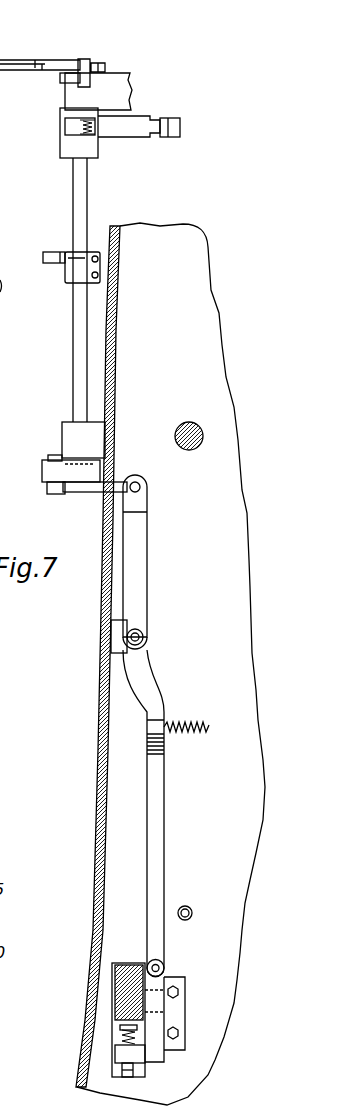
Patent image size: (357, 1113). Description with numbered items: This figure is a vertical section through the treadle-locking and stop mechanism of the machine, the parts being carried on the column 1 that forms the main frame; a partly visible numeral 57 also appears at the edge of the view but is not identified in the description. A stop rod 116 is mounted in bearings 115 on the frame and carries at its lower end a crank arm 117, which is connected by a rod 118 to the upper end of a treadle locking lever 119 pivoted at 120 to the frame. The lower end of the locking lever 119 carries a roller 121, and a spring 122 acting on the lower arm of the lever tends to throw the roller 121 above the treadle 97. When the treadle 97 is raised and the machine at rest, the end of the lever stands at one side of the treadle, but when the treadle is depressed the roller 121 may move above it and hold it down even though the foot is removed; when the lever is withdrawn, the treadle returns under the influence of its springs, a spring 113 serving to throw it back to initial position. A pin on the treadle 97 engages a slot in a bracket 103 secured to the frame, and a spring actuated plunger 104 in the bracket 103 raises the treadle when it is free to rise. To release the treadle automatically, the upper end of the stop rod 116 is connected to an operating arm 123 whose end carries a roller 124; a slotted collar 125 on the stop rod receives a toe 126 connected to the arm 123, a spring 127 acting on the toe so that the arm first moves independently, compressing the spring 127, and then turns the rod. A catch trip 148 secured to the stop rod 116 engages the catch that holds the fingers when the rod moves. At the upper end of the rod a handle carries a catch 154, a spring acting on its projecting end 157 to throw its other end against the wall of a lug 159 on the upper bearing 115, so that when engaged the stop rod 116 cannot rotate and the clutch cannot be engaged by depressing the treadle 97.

The column 1 is at (98, 722).
The lever (partial) 57 is at (9, 272).
The treadle 97 is at (120, 985).
The bracket 103 is at (155, 1057).
The spring actuated plunger 104 is at (125, 1038).
The spring 113 is at (183, 906).
The bearings 115 is at (70, 94).
The stop rod 116 is at (73, 190).
The crank arm 117 is at (48, 469).
The rod 118 is at (95, 492).
The treadle locking lever 119 is at (148, 560).
The pivot 120 is at (140, 637).
The roller 121 is at (162, 975).
The spring 122 is at (186, 724).
The operating arm 123 is at (136, 117).
The roller 124 is at (188, 142).
The slotted collar 125 is at (62, 148).
The toe 126 is at (70, 126).
The spring 127 is at (88, 136).
The catch trip 148 is at (55, 246).
The catch 154 is at (88, 66).
The projecting end 157 is at (1, 55).
The lug 159 is at (60, 78).